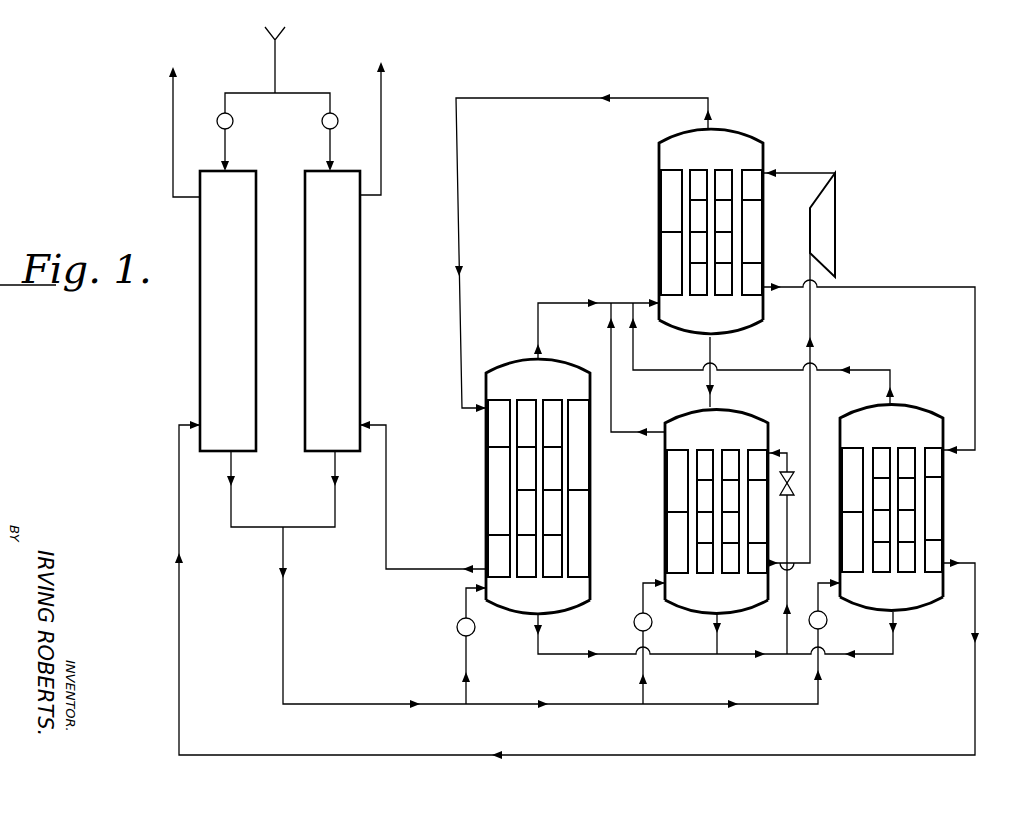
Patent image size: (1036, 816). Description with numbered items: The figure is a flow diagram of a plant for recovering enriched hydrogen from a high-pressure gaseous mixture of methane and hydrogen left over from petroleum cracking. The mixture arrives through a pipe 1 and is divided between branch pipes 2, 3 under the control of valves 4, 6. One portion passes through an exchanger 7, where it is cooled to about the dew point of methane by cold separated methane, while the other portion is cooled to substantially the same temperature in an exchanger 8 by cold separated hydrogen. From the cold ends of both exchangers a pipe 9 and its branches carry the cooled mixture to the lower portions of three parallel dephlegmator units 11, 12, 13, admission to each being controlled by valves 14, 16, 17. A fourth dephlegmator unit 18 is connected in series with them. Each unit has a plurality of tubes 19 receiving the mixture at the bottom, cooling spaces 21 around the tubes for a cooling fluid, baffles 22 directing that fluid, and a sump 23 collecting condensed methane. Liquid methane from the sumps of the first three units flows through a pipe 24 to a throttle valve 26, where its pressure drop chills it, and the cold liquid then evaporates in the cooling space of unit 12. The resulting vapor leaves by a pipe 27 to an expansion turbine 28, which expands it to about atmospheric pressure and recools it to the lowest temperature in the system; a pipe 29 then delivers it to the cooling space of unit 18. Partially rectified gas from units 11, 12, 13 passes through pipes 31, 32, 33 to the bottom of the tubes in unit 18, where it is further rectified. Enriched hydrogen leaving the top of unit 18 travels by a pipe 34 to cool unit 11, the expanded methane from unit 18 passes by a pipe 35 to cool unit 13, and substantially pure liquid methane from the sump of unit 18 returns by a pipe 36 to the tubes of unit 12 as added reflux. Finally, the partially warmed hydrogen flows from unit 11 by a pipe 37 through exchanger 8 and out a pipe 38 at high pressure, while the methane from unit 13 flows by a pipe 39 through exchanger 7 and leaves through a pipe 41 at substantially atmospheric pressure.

The pipe 1 is at (275, 60).
The branch pipe 2 is at (250, 93).
The branch pipe 3 is at (310, 93).
The valve 4 is at (218, 127).
The valve 6 is at (322, 124).
The exchanger 7 is at (200, 312).
The exchanger 8 is at (360, 305).
The pipe 9 is at (283, 616).
The dephlegmator unit 11 is at (486, 490).
The dephlegmator unit 12 is at (665, 487).
The dephlegmator unit 13 is at (943, 500).
The valve 14 is at (457, 626).
The valve 16 is at (634, 626).
The valve 17 is at (827, 624).
The dephlegmator unit 18 is at (659, 228).
The tubes 19 is at (550, 388).
The cooling spaces 21 is at (490, 433).
The baffles 22 is at (500, 535).
The sump 23 is at (714, 461).
The pipe 24 is at (787, 632).
The throttle valve 26 is at (789, 486).
The pipe 27 is at (810, 397).
The expansion turbine 28 is at (826, 222).
The pipe 29 is at (790, 172).
The pipe 31 is at (538, 337).
The pipe 32 is at (611, 342).
The pipe 33 is at (633, 360).
The pipe 34 is at (555, 98).
The pipe 35 is at (869, 358).
The pipe 36 is at (710, 350).
The pipe 37 is at (428, 570).
The pipe 38 is at (381, 146).
The pipe 39 is at (179, 447).
The pipe 41 is at (173, 118).